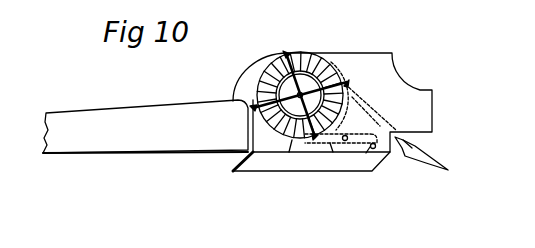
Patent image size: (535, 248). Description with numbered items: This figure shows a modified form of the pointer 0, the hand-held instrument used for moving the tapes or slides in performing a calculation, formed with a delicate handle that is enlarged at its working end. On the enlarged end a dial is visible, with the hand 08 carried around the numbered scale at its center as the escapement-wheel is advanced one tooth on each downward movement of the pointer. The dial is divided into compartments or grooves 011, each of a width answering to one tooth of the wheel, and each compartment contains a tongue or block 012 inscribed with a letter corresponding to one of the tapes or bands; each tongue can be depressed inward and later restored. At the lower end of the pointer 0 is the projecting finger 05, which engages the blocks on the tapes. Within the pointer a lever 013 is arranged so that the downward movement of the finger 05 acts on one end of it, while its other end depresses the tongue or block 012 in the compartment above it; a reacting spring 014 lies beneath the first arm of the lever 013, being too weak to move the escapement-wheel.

The pointer 0 is at (237, 112).
The compartments or grooves 011 is at (262, 68).
The hand 08 is at (299, 95).
The tongue or block 012 is at (290, 153).
The lever 013 is at (341, 150).
The spring 014 is at (370, 125).
The projecting finger 05 is at (463, 131).